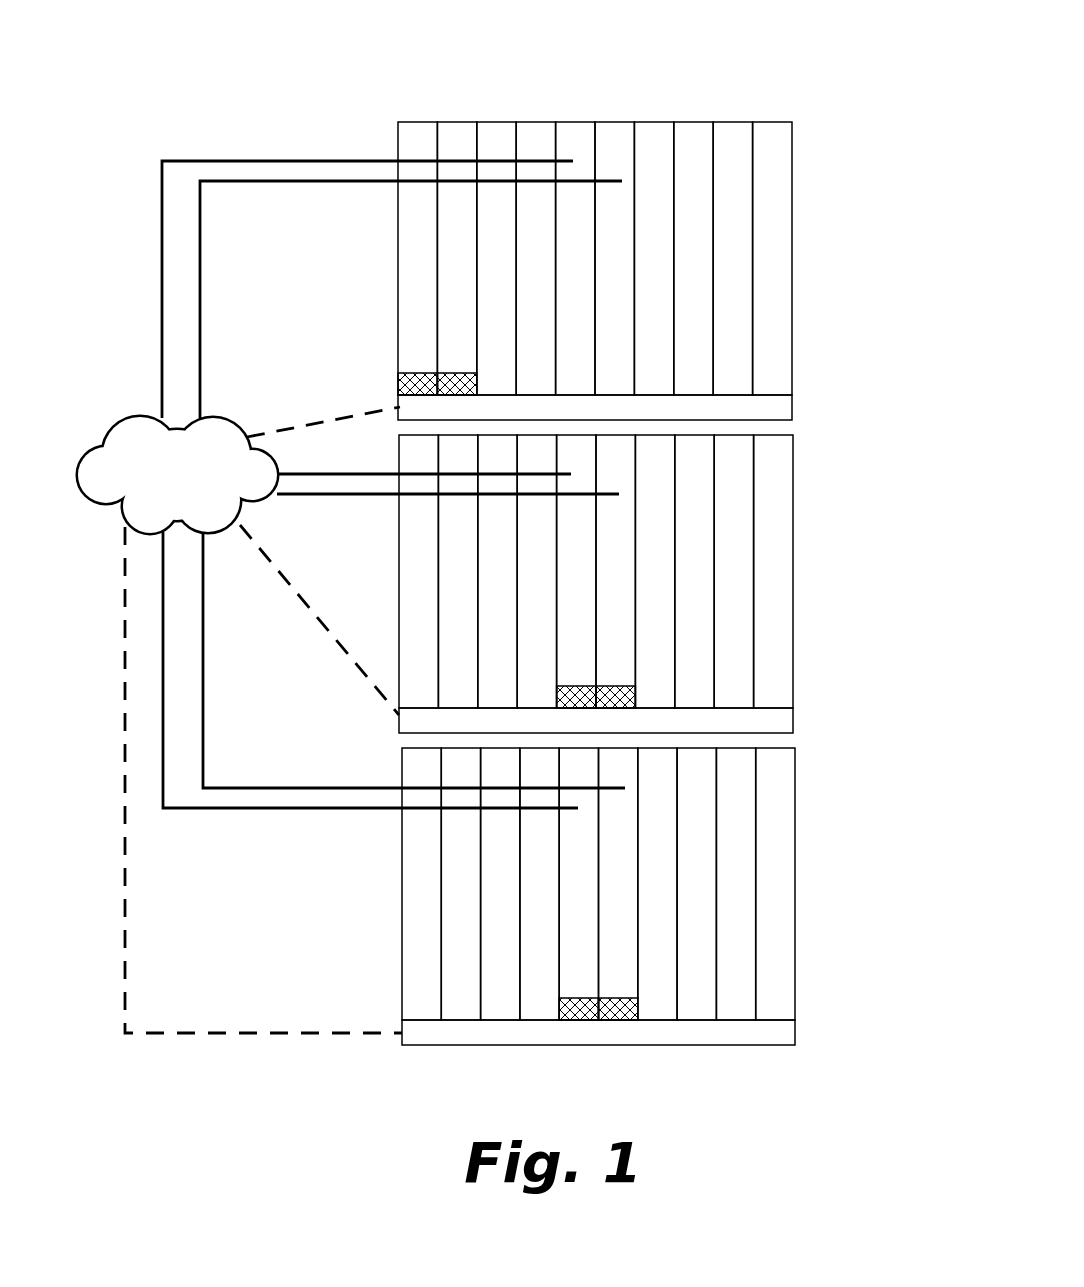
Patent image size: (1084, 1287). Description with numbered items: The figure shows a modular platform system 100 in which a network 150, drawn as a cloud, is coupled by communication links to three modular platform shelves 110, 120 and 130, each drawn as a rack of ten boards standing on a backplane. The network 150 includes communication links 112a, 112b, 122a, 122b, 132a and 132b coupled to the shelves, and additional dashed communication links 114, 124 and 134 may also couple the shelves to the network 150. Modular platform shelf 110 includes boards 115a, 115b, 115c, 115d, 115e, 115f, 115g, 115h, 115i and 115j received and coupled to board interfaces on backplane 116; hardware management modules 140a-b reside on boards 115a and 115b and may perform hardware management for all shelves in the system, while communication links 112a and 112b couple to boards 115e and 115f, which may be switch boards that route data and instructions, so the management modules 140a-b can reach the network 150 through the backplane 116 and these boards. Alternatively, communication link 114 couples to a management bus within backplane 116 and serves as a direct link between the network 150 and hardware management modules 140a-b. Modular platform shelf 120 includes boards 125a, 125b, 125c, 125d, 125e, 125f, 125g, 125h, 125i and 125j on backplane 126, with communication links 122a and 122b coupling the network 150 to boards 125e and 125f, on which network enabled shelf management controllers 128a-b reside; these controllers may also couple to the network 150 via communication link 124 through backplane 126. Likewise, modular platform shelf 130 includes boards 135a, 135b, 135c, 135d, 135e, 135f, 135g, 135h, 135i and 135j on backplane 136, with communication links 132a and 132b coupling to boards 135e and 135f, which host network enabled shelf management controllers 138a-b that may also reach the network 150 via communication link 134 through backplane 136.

The modular platform system 100 is at (361, 75).
The modular platform shelf 110 is at (588, 263).
The communication link 112a is at (295, 162).
The communication link 112b is at (242, 183).
The communication link 114 is at (352, 417).
The board 115a is at (417, 258).
The board 115b is at (456, 258).
The board 115c is at (496, 258).
The board 115d is at (535, 258).
The board 115e is at (575, 258).
The board 115f is at (614, 258).
The board 115g is at (653, 258).
The board 115h is at (693, 258).
The board 115i is at (732, 258).
The board 115j is at (772, 258).
The backplane 116 is at (793, 405).
The modular platform shelf 120 is at (665, 582).
The communication link 122a is at (337, 477).
The communication link 122b is at (293, 492).
The communication link 124 is at (337, 643).
The board 125a is at (418, 571).
The board 125b is at (457, 571).
The board 125c is at (497, 571).
The board 125d is at (536, 571).
The board 125e is at (576, 571).
The board 125f is at (615, 571).
The board 125g is at (654, 571).
The board 125h is at (694, 571).
The board 125i is at (733, 571).
The board 125j is at (773, 571).
The backplane 126 is at (795, 720).
The network enabled shelf management controllers 128a-b is at (618, 685).
The modular platform shelf 130 is at (667, 893).
The communication link 132a is at (310, 790).
The communication link 132b is at (208, 808).
The communication link 134 is at (280, 1033).
The board 135a is at (421, 884).
The board 135b is at (460, 884).
The board 135c is at (500, 884).
The board 135d is at (539, 884).
The board 135e is at (578, 884).
The board 135f is at (618, 884).
The board 135g is at (657, 884).
The board 135h is at (696, 884).
The board 135i is at (735, 884).
The board 135j is at (775, 884).
The backplane 136 is at (797, 1032).
The network enabled shelf management controllers 138a-b is at (620, 997).
The hardware management modules 140a-b is at (458, 372).
The network 150 is at (177, 475).